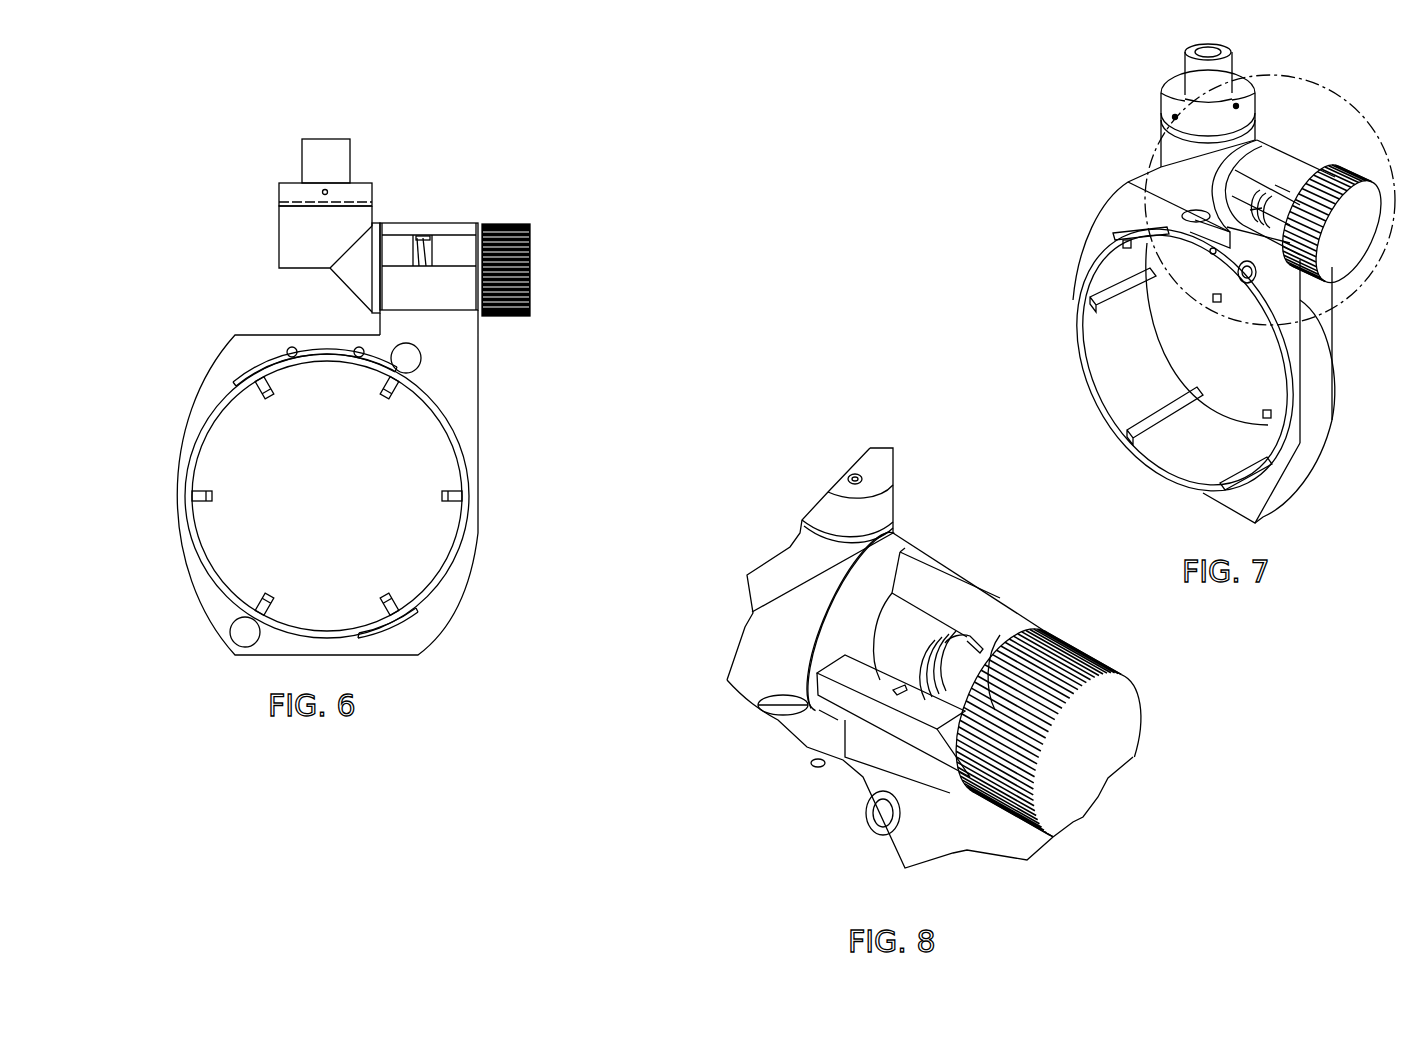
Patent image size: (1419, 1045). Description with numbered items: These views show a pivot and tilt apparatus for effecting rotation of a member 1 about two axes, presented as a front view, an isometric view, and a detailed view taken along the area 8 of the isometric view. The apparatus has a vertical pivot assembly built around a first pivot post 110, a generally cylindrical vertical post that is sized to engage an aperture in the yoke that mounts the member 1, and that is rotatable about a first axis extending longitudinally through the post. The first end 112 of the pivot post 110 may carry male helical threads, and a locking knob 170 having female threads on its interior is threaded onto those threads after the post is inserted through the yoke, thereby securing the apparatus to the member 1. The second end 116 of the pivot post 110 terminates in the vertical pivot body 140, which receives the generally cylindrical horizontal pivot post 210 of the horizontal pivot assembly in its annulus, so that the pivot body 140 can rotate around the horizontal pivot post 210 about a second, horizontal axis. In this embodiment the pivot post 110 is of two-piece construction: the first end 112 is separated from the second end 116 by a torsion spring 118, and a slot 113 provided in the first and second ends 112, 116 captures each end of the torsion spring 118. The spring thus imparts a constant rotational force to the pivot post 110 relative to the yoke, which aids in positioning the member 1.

In FIG. 6, the member 1 is at (432, 615).
In FIG. 6, the first pivot post 110 is at (460, 247).
In FIG. 8, the first pivot post 110 is at (1040, 620).
In FIG. 8, the first end 112 is at (943, 692).
In FIG. 8, the slot 113 is at (987, 652).
In FIG. 8, the second end 116 is at (905, 610).
In FIG. 6, the torsion spring 118 is at (420, 237).
In FIG. 8, the torsion spring 118 is at (937, 632).
In FIG. 6, the vertical pivot body 140 is at (293, 247).
In FIG. 6, the locking knob 170 is at (530, 265).
In FIG. 6, the horizontal pivot post 210 is at (337, 161).
In FIG. 7, the area 8 is at (1245, 75).